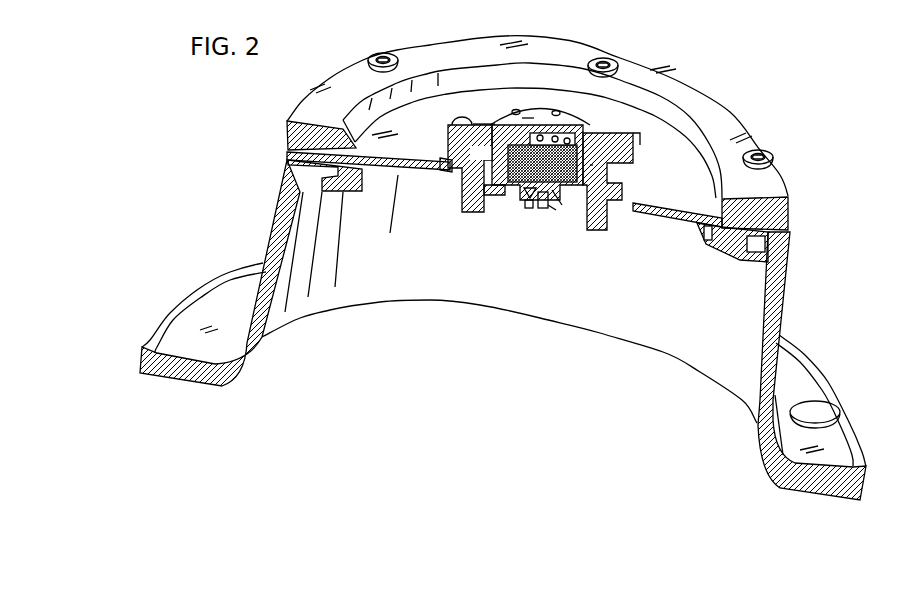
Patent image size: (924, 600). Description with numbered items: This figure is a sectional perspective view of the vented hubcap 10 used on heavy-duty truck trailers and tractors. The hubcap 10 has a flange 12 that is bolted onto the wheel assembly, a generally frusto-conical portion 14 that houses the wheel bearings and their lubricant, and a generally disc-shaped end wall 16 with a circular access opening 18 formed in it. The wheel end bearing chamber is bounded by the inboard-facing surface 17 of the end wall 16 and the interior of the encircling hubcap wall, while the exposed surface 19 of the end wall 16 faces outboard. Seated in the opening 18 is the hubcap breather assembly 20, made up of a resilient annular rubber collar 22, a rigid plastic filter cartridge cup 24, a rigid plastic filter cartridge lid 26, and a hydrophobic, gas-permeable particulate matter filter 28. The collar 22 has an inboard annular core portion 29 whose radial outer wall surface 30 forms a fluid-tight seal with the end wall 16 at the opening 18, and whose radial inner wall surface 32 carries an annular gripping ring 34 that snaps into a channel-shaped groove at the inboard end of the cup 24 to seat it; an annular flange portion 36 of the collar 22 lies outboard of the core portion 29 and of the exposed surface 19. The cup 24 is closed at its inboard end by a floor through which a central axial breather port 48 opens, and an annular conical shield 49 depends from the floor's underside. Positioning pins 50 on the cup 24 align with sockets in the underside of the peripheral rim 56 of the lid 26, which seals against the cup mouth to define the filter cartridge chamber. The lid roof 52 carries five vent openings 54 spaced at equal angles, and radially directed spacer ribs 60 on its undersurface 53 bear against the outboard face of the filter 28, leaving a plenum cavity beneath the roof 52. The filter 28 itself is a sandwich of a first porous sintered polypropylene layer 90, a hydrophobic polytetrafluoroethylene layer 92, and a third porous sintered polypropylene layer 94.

The vented hubcap 10 is at (234, 158).
The flange 12 is at (203, 300).
The frusto-conical portion 14 is at (268, 225).
The end wall 16 is at (386, 128).
The surface 17 is at (672, 218).
The access opening 18 is at (462, 208).
The exposed surface 19 is at (406, 115).
The hubcap breather assembly 20 is at (642, 140).
The rubber collar 22 is at (642, 183).
The filter cartridge cup 24 is at (505, 195).
The filter cartridge lid 26 is at (528, 106).
The particulate matter filter 28 is at (528, 197).
The core portion 29 is at (609, 227).
The outer wall surface 30 is at (455, 163).
The inner wall surface 32 is at (560, 200).
The gripping ring 34 is at (478, 146).
The flange portion 36 is at (637, 143).
The breather port 48 is at (530, 208).
The conical shield 49 is at (553, 208).
The positioning pins 50 is at (478, 124).
The roof 52 is at (503, 115).
The undersurface 53 is at (556, 134).
The vent openings 54 is at (516, 109).
The peripheral rim 56 is at (463, 110).
The spacer ribs 60 is at (542, 133).
The first porous layer 90 is at (635, 168).
The hydrophobic layer 92 is at (555, 164).
The third porous layer 94 is at (543, 208).